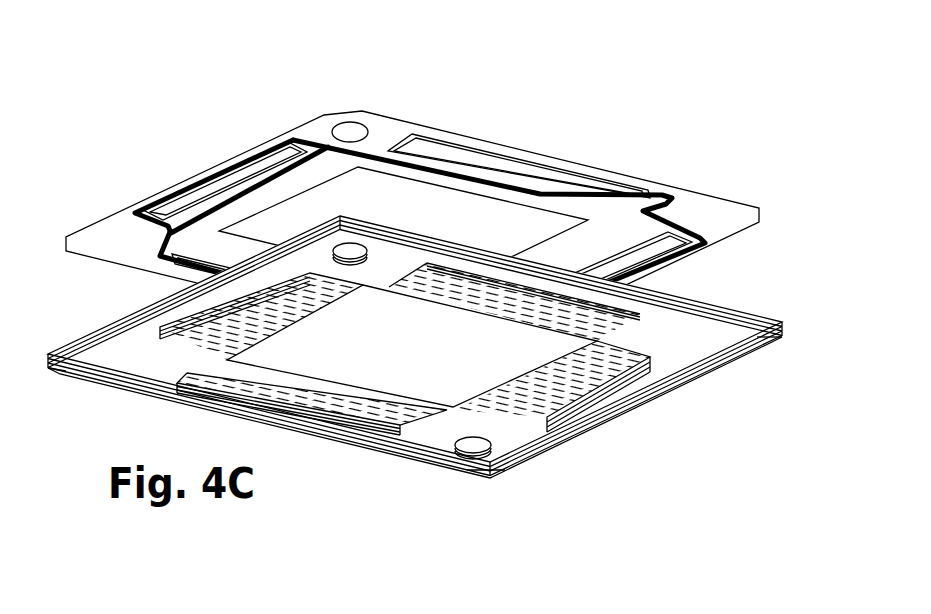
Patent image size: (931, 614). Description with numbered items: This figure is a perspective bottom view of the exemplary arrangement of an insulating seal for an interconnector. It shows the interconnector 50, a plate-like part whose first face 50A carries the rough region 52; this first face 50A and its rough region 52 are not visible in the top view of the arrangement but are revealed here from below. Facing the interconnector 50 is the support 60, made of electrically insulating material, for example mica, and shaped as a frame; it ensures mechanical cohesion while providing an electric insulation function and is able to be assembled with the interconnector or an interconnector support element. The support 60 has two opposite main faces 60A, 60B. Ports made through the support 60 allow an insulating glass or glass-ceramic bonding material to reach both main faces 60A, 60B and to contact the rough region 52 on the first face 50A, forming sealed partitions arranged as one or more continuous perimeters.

The upper substrate / cover plate 50 is at (427, 182).
The first face 50A is at (735, 206).
The rough region 52 is at (124, 237).
The support 60 is at (446, 369).
The main face 60A is at (749, 300).
The main face 60B is at (720, 370).